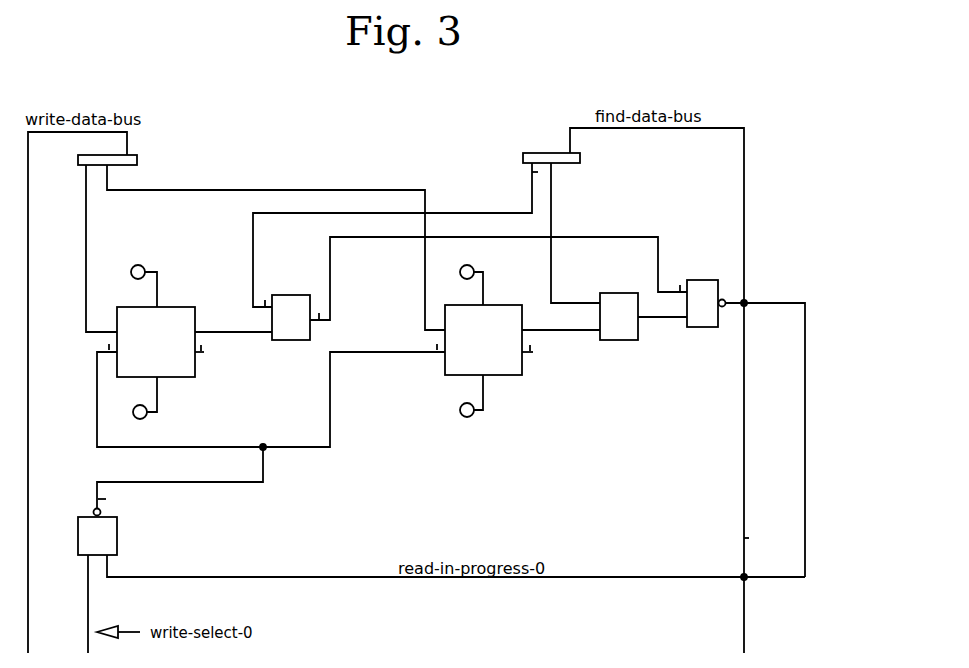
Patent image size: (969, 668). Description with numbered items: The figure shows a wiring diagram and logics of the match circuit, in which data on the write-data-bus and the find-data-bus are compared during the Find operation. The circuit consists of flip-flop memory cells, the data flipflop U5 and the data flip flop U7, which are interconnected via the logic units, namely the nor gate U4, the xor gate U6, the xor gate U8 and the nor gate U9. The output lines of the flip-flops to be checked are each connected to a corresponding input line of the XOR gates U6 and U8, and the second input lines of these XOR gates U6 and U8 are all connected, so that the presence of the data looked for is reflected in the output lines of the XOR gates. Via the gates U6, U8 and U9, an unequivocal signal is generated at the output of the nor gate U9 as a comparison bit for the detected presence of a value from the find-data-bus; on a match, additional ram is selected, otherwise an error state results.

The nor gate U4 is at (145, 535).
The data flipflop U5 is at (210, 390).
The xor gate U6 is at (287, 270).
The data flip flop U7 is at (504, 400).
The xor gate U8 is at (622, 362).
The nor gate U9 is at (703, 350).